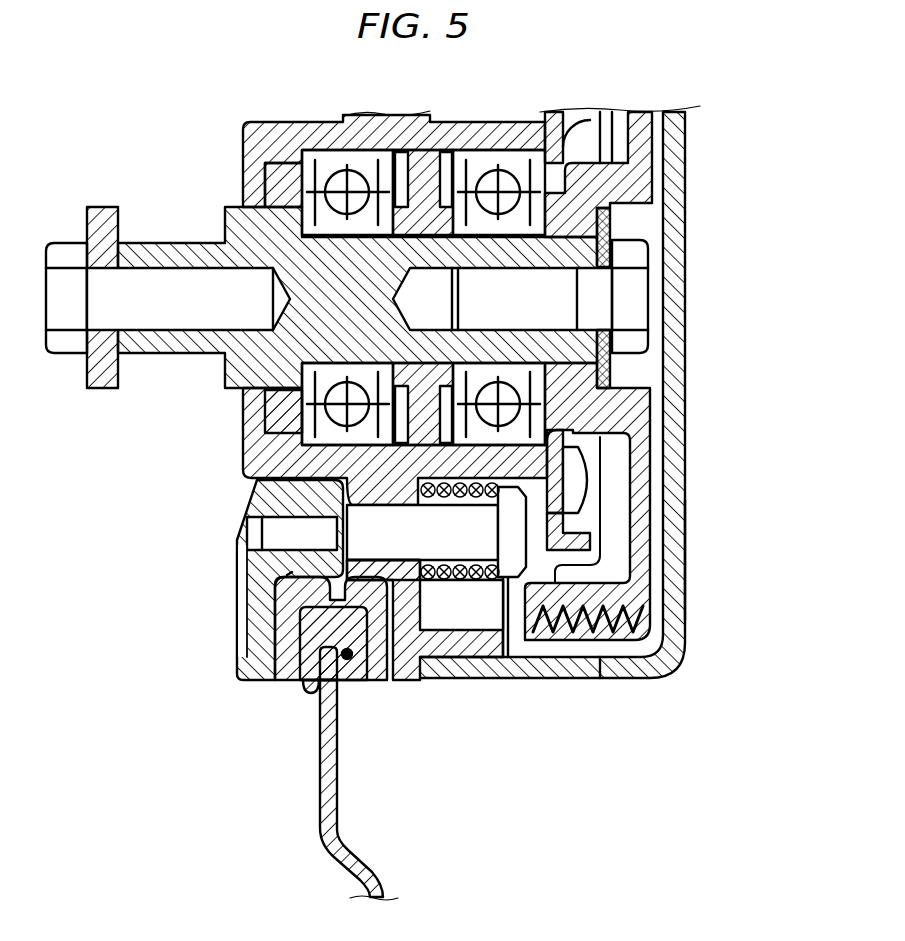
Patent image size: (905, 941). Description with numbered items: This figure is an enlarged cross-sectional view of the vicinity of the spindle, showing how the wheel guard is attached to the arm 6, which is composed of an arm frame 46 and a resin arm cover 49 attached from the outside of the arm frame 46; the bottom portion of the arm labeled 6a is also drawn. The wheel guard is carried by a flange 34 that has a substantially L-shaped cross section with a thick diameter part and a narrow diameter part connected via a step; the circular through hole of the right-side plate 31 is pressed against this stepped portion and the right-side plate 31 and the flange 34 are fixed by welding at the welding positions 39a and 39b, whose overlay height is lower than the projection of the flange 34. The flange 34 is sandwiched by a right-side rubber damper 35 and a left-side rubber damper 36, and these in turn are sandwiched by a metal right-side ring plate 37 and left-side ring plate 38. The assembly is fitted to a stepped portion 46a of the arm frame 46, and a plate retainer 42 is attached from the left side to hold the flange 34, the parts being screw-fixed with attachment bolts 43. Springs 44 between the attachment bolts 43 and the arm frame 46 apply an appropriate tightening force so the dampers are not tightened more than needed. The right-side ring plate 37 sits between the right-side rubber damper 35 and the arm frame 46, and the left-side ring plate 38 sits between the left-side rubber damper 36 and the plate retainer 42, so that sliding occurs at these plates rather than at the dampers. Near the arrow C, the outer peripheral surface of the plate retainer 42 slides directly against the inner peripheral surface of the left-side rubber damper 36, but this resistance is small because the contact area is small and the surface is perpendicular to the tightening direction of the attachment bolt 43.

The arm 6 is at (690, 290).
The housing bottom plate 6a is at (410, 690).
The right-side plate 31 is at (323, 850).
The flange 34 is at (255, 690).
The right-side rubber damper 35 is at (380, 683).
The left-side rubber damper 36 is at (292, 683).
The right-side ring plate 37 is at (420, 688).
The left-side ring plate 38 is at (270, 683).
The welding position 39a is at (311, 702).
The welding position 39b is at (346, 667).
The plate retainer 42 is at (237, 660).
The attachment bolt 43 is at (510, 510).
The spring 44 is at (440, 556).
The arm frame 46 is at (477, 680).
The stepped portion 46a is at (400, 578).
The arm cover 49 is at (690, 560).
The arrow C is at (290, 571).